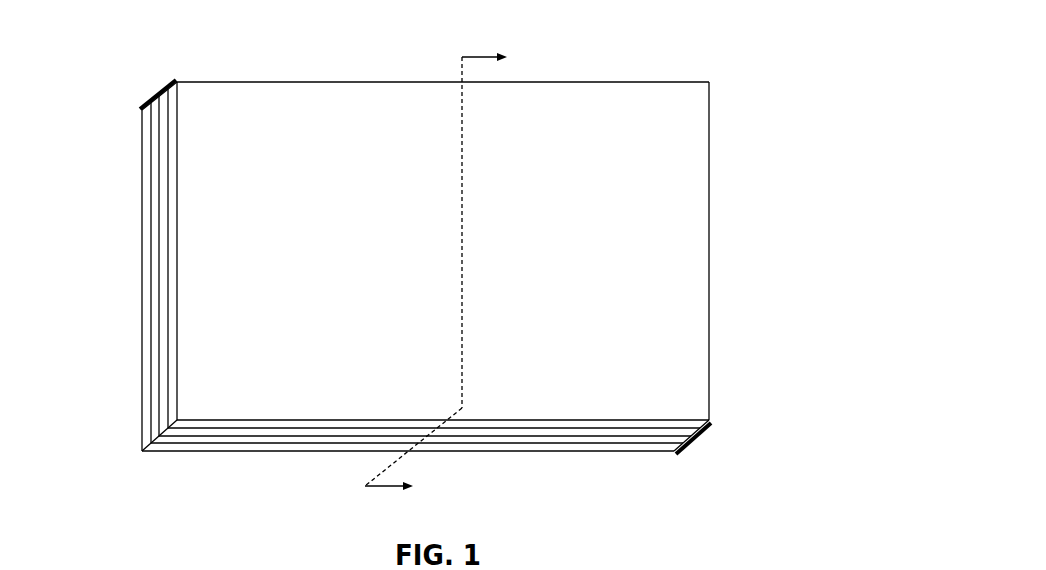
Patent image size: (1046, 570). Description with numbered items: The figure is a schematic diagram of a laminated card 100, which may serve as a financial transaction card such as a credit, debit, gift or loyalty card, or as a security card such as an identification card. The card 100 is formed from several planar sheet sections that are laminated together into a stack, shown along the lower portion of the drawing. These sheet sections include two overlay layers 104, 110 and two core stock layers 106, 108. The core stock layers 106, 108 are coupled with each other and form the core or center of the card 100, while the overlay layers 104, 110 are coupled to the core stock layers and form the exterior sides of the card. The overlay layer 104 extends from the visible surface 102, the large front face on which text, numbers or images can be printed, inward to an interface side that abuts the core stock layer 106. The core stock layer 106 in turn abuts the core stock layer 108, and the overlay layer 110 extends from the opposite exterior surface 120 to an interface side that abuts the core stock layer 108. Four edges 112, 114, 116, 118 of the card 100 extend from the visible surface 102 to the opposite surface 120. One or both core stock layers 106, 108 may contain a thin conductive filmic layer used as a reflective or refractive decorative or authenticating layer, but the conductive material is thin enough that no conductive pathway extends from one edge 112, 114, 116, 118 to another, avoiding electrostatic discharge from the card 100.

The laminated card 100 is at (459, 261).
The visible surface 102 is at (676, 254).
The overlay layer 104 is at (662, 427).
The core stock layer 106 is at (563, 442).
The core stock layer 108 is at (338, 443).
The overlay layer 110 is at (228, 445).
The edge 112 is at (152, 97).
The edge 114 is at (695, 438).
The edge 116 is at (716, 300).
The edge 118 is at (284, 76).
The exterior surface 120 is at (175, 470).